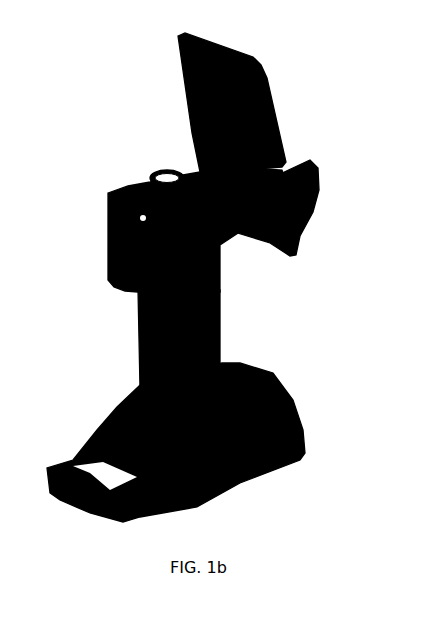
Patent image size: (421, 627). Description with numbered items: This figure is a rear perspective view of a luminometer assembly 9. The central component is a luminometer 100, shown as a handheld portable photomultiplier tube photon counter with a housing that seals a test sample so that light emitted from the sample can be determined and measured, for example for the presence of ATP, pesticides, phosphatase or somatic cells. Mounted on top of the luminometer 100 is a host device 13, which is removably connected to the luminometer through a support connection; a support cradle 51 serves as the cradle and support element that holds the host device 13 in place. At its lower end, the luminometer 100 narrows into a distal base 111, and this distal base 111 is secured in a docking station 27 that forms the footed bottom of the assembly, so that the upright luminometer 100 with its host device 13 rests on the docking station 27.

The luminometer assembly 9 is at (202, 270).
The host device 13 is at (267, 77).
The support cradle 51 is at (312, 176).
The luminometer 100 is at (202, 238).
The distal base 111 is at (137, 390).
The docking station 27 is at (285, 405).